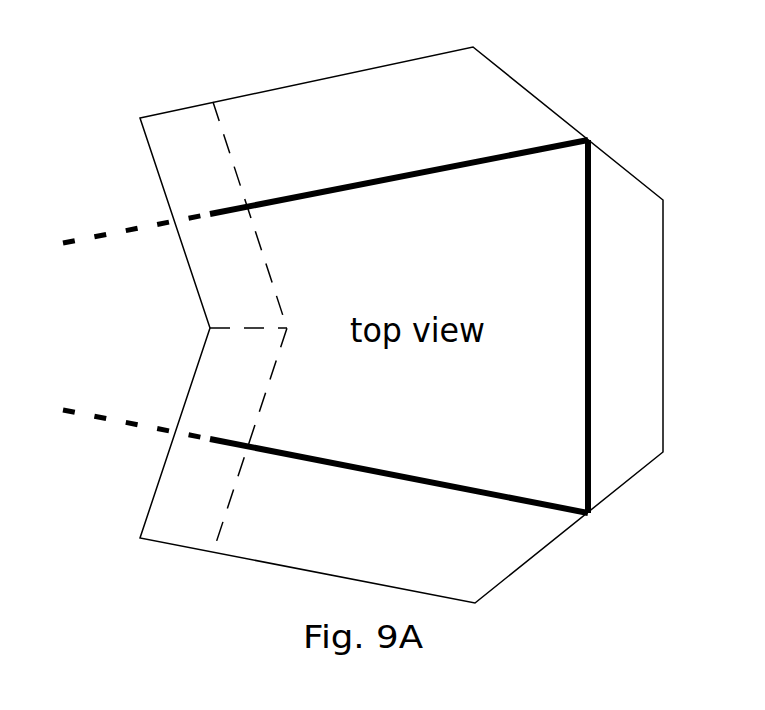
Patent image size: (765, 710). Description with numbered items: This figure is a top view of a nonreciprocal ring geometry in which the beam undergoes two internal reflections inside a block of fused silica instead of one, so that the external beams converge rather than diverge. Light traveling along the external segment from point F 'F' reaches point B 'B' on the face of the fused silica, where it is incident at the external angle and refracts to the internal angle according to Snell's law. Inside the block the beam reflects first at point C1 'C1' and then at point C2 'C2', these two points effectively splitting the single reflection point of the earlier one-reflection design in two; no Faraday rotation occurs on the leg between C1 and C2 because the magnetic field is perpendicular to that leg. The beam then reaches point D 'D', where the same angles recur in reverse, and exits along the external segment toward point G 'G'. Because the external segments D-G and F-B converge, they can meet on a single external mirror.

The external beam point G is at (131, 221).
The external beam point F is at (133, 435).
The refraction point D is at (389, 177).
The refraction point B is at (394, 476).
The internal reflection point C2 is at (611, 214).
The internal reflection point C1 is at (614, 439).